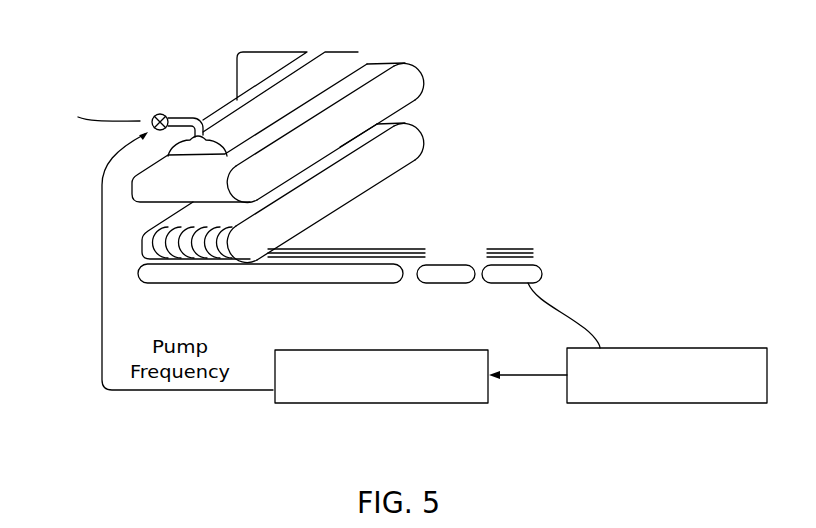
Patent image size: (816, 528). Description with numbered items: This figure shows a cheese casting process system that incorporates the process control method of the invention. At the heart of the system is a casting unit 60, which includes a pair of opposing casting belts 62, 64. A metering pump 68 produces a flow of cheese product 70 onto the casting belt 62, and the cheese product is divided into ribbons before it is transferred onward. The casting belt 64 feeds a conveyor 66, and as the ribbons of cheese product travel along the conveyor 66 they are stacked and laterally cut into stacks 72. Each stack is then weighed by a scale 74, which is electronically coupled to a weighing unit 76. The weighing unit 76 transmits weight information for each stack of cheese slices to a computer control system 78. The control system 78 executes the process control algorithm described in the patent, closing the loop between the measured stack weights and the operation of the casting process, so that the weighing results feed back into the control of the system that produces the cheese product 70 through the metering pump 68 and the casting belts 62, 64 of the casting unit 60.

The casting unit 60 is at (410, 47).
The casting belt 62 is at (426, 84).
The casting belt 64 is at (426, 144).
The conveyor 66 is at (293, 279).
The metering pump 68 is at (180, 113).
The cheese product 70 is at (253, 120).
The stacks 72 is at (512, 249).
The scale 74 is at (548, 272).
The weighing unit 76 is at (600, 393).
The computer control system 78 is at (353, 397).